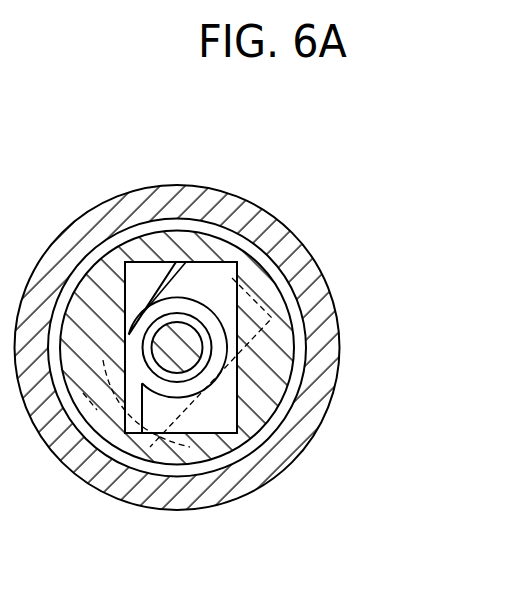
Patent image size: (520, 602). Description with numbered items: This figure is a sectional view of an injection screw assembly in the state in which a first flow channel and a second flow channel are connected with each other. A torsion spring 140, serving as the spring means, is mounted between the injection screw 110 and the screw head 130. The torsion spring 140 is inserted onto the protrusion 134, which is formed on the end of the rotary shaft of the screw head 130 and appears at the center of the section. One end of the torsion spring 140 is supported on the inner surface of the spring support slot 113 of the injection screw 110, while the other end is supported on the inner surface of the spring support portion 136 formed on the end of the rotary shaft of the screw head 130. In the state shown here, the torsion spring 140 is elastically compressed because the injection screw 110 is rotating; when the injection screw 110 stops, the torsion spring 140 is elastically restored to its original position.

The injection screw 110 is at (293, 247).
The spring support slot 113 is at (200, 455).
The screw head 130 is at (300, 381).
The protrusion 134 is at (192, 357).
The spring support portion 136 is at (245, 432).
The torsion spring 140 is at (215, 328).